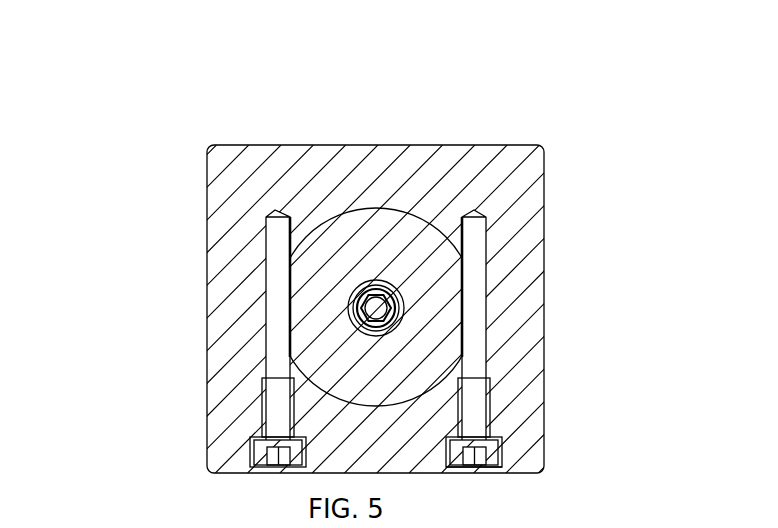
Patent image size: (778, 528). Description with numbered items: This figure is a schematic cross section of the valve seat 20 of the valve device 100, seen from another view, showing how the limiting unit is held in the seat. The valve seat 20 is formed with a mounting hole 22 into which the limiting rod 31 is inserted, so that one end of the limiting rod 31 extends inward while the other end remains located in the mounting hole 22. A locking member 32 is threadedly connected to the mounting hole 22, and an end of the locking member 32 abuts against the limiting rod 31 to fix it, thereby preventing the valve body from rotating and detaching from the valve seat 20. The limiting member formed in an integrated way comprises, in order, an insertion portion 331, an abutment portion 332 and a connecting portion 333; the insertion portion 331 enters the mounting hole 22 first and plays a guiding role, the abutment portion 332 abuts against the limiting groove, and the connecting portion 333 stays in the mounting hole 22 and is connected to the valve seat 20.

The valve device 100 is at (362, 76).
The valve seat 20 is at (520, 216).
The mounting hole 22 is at (483, 470).
The limiting rod 31 is at (472, 313).
The locking member 32 is at (490, 452).
The insertion portion 331 is at (272, 266).
The abutment portion 332 is at (290, 315).
The connecting portion 333 is at (280, 373).